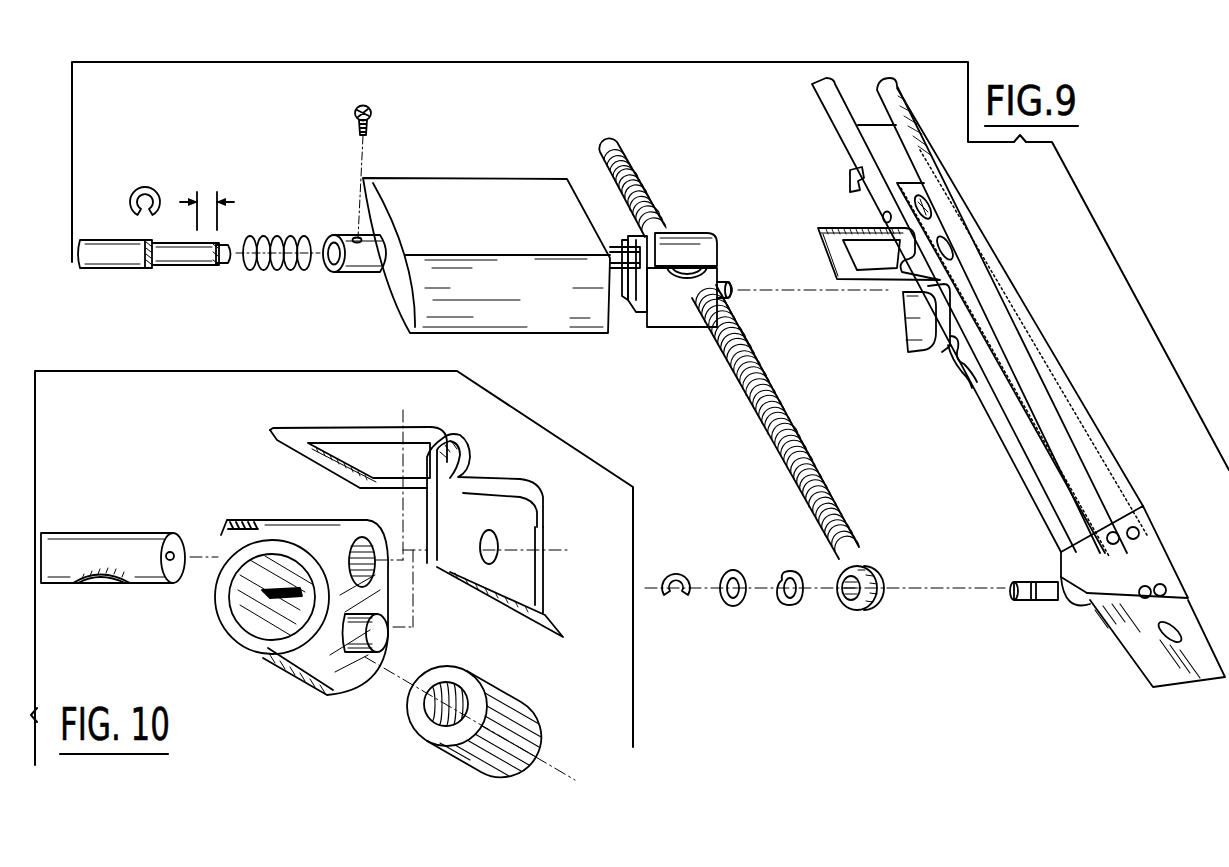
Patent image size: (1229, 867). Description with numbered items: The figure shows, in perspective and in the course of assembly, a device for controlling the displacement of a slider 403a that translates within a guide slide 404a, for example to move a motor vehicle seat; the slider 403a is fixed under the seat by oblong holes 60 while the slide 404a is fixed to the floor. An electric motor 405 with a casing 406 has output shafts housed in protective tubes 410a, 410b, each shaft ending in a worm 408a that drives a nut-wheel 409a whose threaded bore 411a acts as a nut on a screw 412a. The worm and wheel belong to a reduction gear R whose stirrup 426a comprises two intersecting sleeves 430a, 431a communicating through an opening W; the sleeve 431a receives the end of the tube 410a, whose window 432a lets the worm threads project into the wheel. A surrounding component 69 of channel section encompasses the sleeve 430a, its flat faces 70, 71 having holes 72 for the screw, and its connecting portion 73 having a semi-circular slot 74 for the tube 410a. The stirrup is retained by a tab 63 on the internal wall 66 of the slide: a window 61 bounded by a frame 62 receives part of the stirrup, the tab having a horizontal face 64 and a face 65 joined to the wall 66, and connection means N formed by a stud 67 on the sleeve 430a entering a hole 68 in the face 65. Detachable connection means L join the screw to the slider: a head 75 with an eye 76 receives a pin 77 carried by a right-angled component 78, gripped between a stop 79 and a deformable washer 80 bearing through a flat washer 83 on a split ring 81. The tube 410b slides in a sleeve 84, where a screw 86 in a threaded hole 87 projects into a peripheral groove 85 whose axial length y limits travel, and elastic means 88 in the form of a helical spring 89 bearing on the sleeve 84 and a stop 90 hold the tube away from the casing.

In FIG. 9, the holes 60 is at (950, 248).
In FIG. 9, the window 61 is at (848, 223).
In FIG. 10, the window 61 is at (330, 439).
In FIG. 10, the frame 62 is at (413, 427).
In FIG. 9, the tab 63 is at (971, 335).
In FIG. 10, the tab 63 is at (421, 507).
In FIG. 9, the face 64 is at (830, 233).
In FIG. 10, the face 64 is at (290, 437).
In FIG. 9, the face 65 is at (926, 338).
In FIG. 10, the face 65 is at (527, 570).
In FIG. 9, the internal wall 66 is at (1013, 447).
In FIG. 9, the stud 67 is at (732, 287).
In FIG. 10, the stud 67 is at (355, 642).
In FIG. 9, the hole 68 is at (917, 318).
In FIG. 10, the hole 68 is at (488, 530).
In FIG. 9, the surrounding component 69 is at (632, 304).
In FIG. 9, the flat face 70 is at (667, 310).
In FIG. 9, the flat face 71 is at (592, 221).
In FIG. 9, the hole 72 is at (675, 300).
In FIG. 9, the portion 73 is at (640, 314).
In FIG. 9, the slot 74 is at (633, 302).
In FIG. 9, the head 75 is at (852, 607).
In FIG. 9, the eye 76 is at (853, 582).
In FIG. 9, the pin 77 is at (1021, 600).
In FIG. 9, the right-angled component 78 is at (1135, 563).
In FIG. 9, the stop 79 is at (1067, 607).
In FIG. 9, the deformable washer 80 is at (790, 606).
In FIG. 9, the split ring 81 is at (680, 570).
In FIG. 9, the flat washer 83 is at (736, 606).
In FIG. 9, the sleeve 84 is at (357, 268).
In FIG. 9, the peripheral groove 85 is at (212, 267).
In FIG. 9, the screw 86 is at (357, 111).
In FIG. 9, the threaded hole 87 is at (362, 240).
In FIG. 9, the elastic means 88 is at (266, 279).
In FIG. 9, the helical spring 89 is at (273, 233).
In FIG. 9, the stop 90 is at (130, 192).
In FIG. 9, the slider 403a is at (1040, 403).
In FIG. 9, the guide slide 404a is at (1040, 343).
In FIG. 9, the electric motor 405 is at (486, 204).
In FIG. 9, the casing 406 is at (425, 205).
In FIG. 10, the worm 408a is at (110, 583).
In FIG. 10, the nut-wheel 409a is at (441, 721).
In FIG. 9, the protective tube 410a is at (633, 310).
In FIG. 10, the protective tube 410a is at (126, 561).
In FIG. 9, the protective tube 410b is at (173, 257).
In FIG. 10, the threaded bore 411a is at (480, 752).
In FIG. 9, the screw 412a is at (887, 484).
In FIG. 9, the stirrup 426a is at (685, 267).
In FIG. 10, the stirrup 426a is at (362, 570).
In FIG. 9, the sleeve 430a is at (700, 262).
In FIG. 10, the sleeve 430a is at (283, 663).
In FIG. 9, the sleeve 431a is at (672, 247).
In FIG. 10, the sleeve 431a is at (257, 523).
In FIG. 10, the window 432a is at (73, 583).
In FIG. 9, the connection means L is at (1003, 597).
In FIG. 9, the connection means N is at (745, 303).
In FIG. 9, the reduction gear R is at (693, 223).
In FIG. 10, the opening W is at (272, 592).
In FIG. 9, the axial length y is at (210, 193).